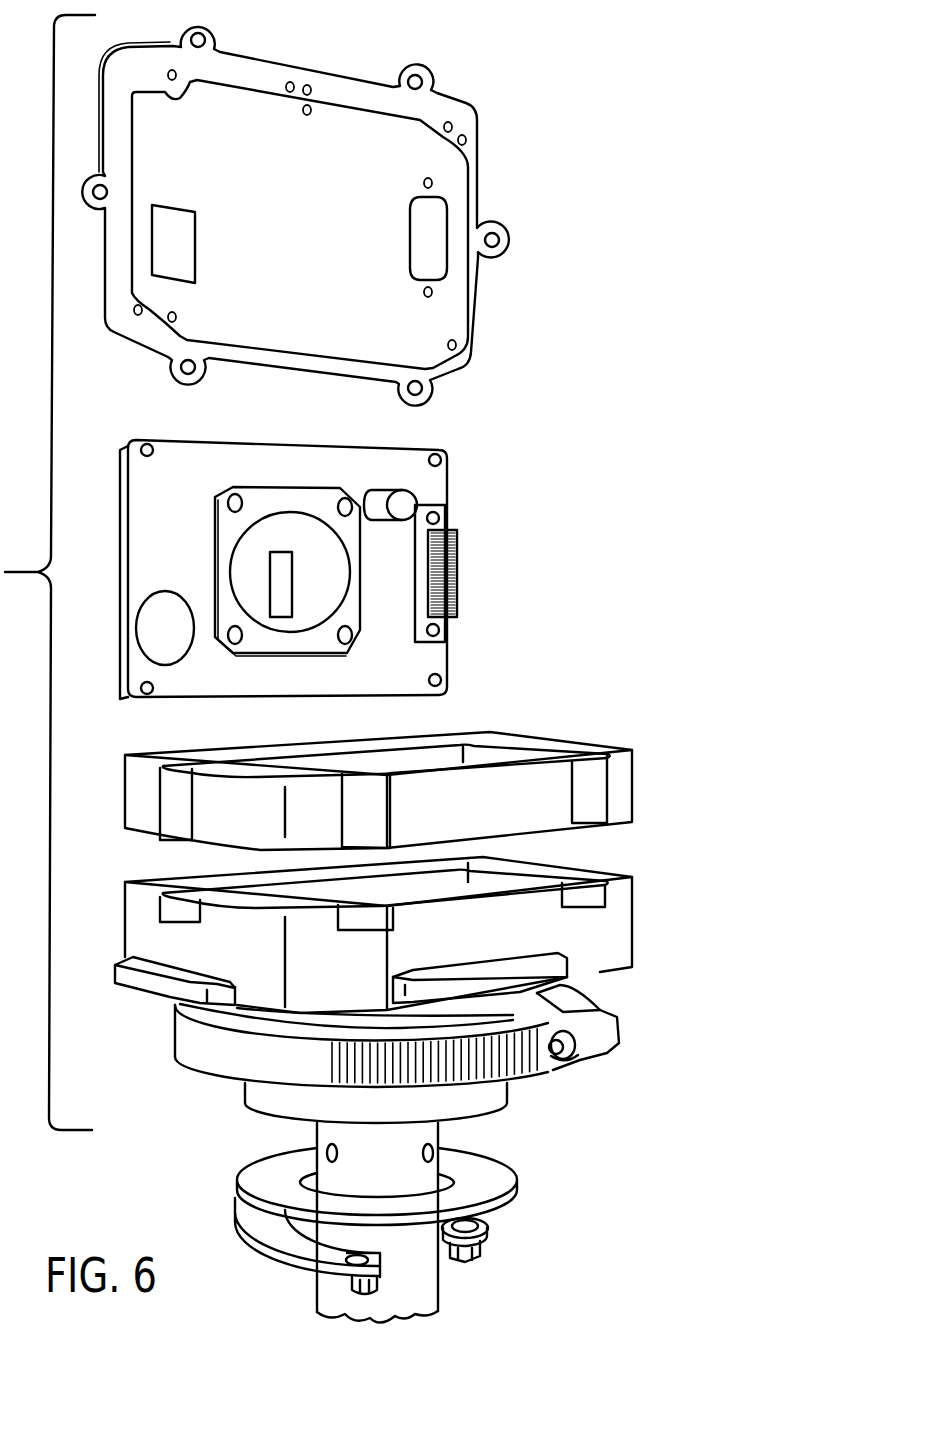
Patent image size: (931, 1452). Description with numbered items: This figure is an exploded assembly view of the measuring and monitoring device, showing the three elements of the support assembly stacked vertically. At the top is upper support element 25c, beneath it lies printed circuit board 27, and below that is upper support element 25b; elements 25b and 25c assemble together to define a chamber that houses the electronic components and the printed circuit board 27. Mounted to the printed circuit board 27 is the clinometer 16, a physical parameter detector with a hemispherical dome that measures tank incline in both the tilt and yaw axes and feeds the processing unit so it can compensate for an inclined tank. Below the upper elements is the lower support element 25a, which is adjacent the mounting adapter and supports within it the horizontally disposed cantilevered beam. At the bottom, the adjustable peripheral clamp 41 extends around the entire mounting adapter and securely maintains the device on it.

The upper support element 25c is at (478, 197).
The printed circuit board 27 is at (330, 547).
The clinometer 16 is at (283, 520).
The upper support element 25b is at (633, 785).
The lower support element 25a is at (633, 937).
The peripheral clamp 41 is at (190, 1040).